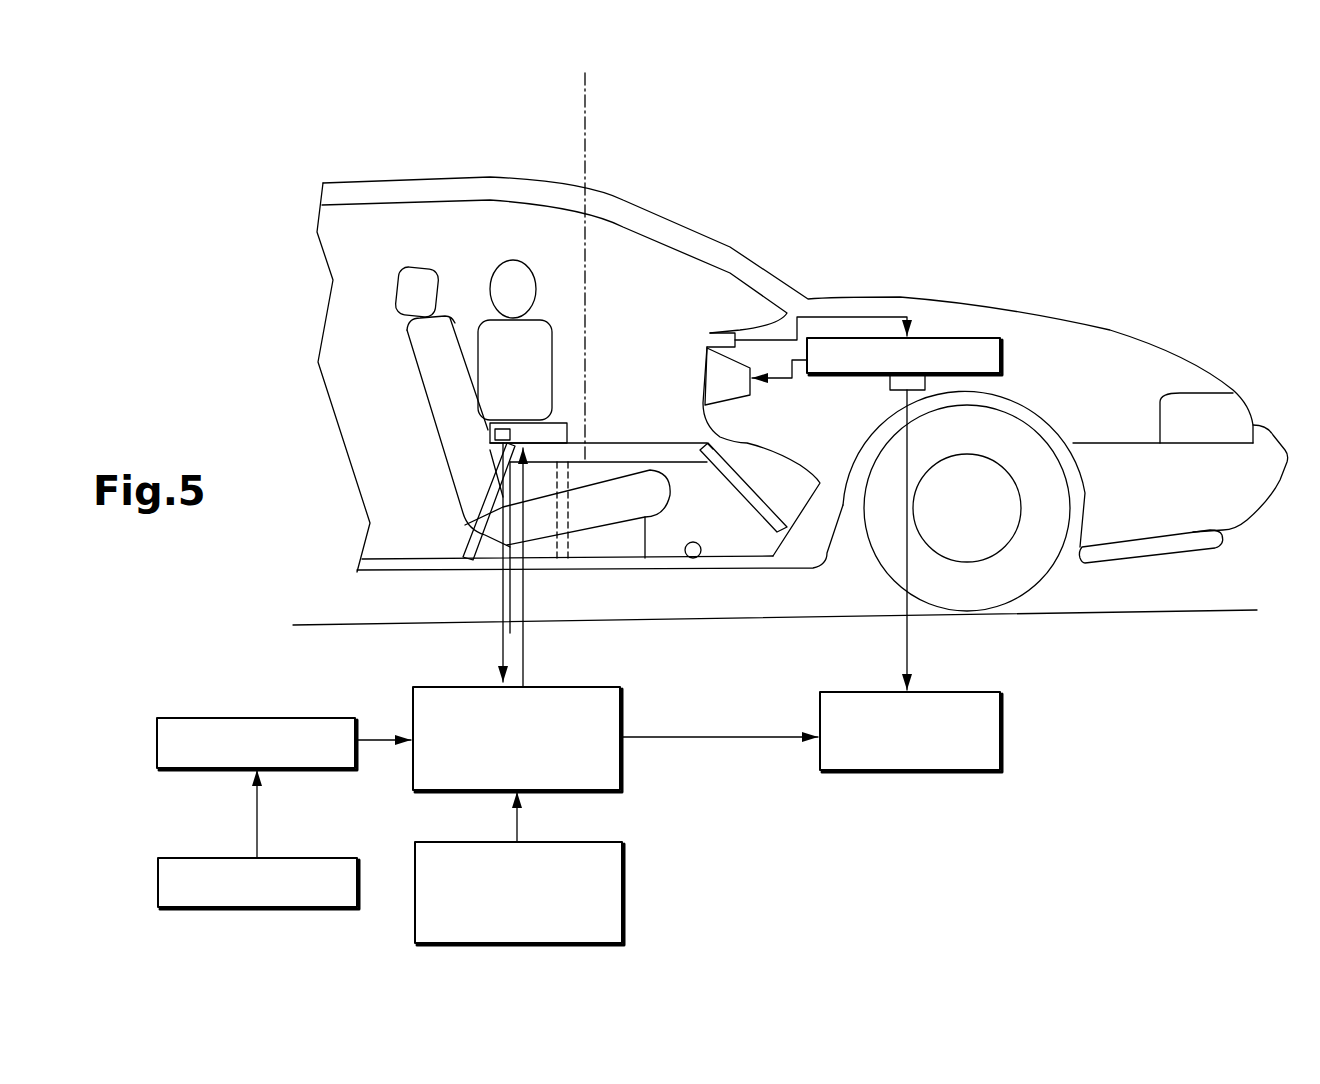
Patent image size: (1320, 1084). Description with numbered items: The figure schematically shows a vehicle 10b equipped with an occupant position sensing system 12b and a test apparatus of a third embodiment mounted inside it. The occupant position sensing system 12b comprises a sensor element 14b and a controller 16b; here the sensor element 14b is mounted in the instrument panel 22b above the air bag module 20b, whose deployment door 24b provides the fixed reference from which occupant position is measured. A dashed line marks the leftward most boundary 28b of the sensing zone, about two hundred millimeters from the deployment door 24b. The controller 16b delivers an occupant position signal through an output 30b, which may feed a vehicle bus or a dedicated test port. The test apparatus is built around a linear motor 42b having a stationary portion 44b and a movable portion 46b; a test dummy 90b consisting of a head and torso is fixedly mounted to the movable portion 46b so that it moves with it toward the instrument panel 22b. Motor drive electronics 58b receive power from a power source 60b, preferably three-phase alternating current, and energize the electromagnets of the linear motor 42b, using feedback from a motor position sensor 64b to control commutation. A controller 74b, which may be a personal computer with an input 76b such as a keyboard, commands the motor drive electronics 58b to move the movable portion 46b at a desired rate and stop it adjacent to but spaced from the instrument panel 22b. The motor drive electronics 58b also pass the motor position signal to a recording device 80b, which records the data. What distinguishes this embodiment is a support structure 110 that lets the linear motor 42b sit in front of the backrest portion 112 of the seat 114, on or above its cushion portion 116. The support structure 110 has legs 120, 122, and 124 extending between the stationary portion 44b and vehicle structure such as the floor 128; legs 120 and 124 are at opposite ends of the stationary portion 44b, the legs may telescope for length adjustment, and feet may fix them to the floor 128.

The vehicle 10b is at (1107, 338).
The occupant position sensing system 12b is at (907, 193).
The sensor element 14b is at (727, 340).
The controller 16b is at (993, 343).
The air bag module 20b is at (727, 378).
The instrument panel 22b is at (752, 302).
The deployment door 24b is at (700, 385).
The leftward most boundary 28b is at (585, 113).
The output 30b is at (893, 383).
The linear motor 42b is at (571, 388).
The stationary portion 44b is at (673, 450).
The movable portion 46b is at (482, 443).
The motor drive electronics 58b is at (602, 712).
The power source 60b is at (600, 872).
The motor position sensor 64b is at (490, 427).
The controller 74b is at (172, 732).
The input 76b is at (185, 863).
The recording device 80b is at (973, 748).
The test dummy 90b is at (508, 258).
The support structure 110 is at (443, 505).
The backrest portion 112 is at (427, 335).
The seat 114 is at (445, 455).
The cushion portion 116 is at (600, 472).
The leg 120 is at (470, 542).
The leg 122 is at (560, 464).
The leg 124 is at (753, 513).
The floor 128 is at (693, 558).